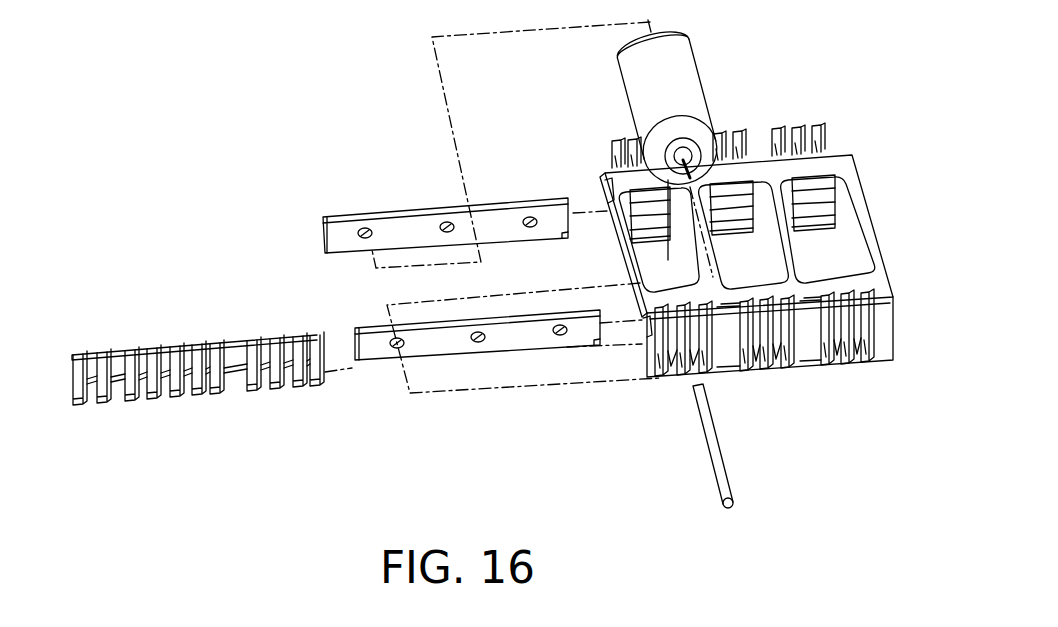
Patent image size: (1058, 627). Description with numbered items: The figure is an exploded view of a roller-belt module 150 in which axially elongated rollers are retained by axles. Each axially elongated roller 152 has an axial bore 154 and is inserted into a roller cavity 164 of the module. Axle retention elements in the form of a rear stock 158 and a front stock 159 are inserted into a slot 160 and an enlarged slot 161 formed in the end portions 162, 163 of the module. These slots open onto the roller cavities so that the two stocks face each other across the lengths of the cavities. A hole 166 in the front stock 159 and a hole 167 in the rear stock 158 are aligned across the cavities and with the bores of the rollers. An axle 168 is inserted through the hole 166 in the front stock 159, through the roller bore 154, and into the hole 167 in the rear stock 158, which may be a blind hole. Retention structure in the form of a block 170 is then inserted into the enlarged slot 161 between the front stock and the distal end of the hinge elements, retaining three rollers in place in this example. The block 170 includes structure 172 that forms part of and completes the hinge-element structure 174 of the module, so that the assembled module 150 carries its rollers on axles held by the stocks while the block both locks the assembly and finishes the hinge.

The roller-belt module 150 is at (254, 87).
The axially elongated roller 152 is at (695, 81).
The axial bore 154 is at (683, 157).
The rear stock 158 is at (331, 221).
The front stock 159 is at (369, 329).
The slot 160 is at (607, 205).
The enlarged slot 161 is at (643, 317).
The end portion 162 is at (828, 163).
The end portion 163 is at (875, 286).
The roller cavity 164 is at (848, 237).
The hole 166 is at (478, 345).
The hole 167 is at (447, 236).
The axle 168 is at (722, 464).
The block 170 is at (164, 349).
The structure 172 is at (247, 383).
The hinge-element structure 174 is at (823, 348).